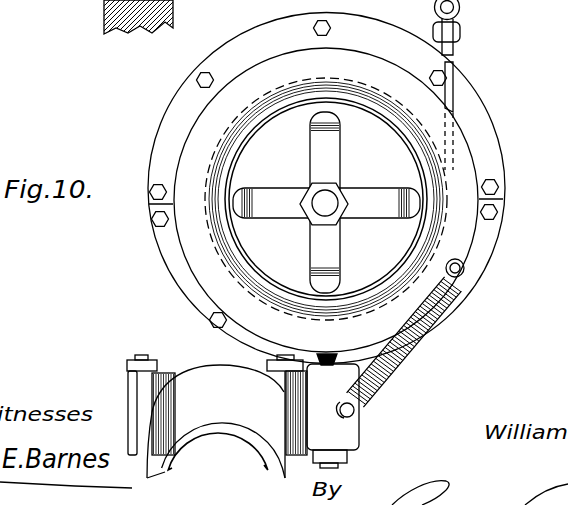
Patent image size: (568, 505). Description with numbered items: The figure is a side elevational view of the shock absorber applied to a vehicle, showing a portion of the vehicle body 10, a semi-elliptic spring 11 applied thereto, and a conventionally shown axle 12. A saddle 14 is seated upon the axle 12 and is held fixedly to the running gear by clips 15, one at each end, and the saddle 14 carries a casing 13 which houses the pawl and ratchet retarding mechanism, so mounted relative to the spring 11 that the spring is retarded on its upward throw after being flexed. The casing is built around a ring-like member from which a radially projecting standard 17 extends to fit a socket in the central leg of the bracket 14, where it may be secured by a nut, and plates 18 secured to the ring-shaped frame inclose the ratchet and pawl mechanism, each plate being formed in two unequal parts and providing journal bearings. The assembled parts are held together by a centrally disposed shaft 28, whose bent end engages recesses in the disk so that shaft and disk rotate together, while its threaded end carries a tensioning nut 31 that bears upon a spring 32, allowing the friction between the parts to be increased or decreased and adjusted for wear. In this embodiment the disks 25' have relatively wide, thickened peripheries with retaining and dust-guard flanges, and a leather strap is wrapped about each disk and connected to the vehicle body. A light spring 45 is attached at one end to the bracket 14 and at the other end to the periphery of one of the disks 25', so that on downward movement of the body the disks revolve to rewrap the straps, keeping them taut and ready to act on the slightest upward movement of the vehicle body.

The vehicle body 10 is at (470, 233).
The spring 11 is at (460, 12).
The axle 12 is at (454, 101).
The casing 13 is at (330, 82).
The saddle 14 is at (342, 435).
The clips 15 is at (286, 424).
The standard 17 is at (173, 13).
The plates 18 is at (218, 55).
The disks 25' is at (511, 158).
The shaft 28 is at (346, 219).
The tensioning nut 31 is at (309, 192).
The spring 32 is at (337, 184).
The light spring 45 is at (400, 363).